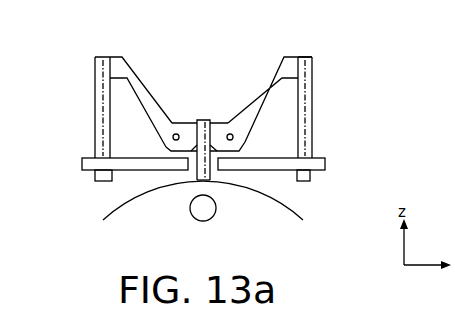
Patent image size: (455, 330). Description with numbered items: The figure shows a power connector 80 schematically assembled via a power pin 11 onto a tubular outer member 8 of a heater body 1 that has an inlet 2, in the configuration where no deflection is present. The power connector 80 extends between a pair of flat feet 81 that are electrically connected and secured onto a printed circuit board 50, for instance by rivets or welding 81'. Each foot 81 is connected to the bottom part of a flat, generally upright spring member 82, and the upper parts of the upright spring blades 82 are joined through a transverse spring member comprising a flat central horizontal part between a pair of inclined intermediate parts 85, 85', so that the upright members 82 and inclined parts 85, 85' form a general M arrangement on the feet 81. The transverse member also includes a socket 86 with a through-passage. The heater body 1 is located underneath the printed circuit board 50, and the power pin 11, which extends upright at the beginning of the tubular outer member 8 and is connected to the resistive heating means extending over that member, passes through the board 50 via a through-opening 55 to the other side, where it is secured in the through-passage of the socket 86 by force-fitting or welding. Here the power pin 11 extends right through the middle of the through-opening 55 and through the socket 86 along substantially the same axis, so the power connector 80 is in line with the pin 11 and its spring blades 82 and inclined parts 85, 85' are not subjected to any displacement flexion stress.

The heater body 1 is at (307, 207).
The inlet 2 is at (204, 209).
The tubular outer member 8 is at (110, 221).
The power pin 11 is at (199, 115).
The printed circuit board 50 is at (82, 163).
The through-opening 55 is at (220, 182).
The power connector 80 is at (328, 62).
The flat feet 81 is at (321, 107).
The rivets or welding 81' is at (73, 186).
The upright spring member 82 is at (97, 91).
The inclined intermediate part 85 is at (270, 92).
The inclined intermediate part 85' is at (141, 95).
The socket 86 is at (216, 131).